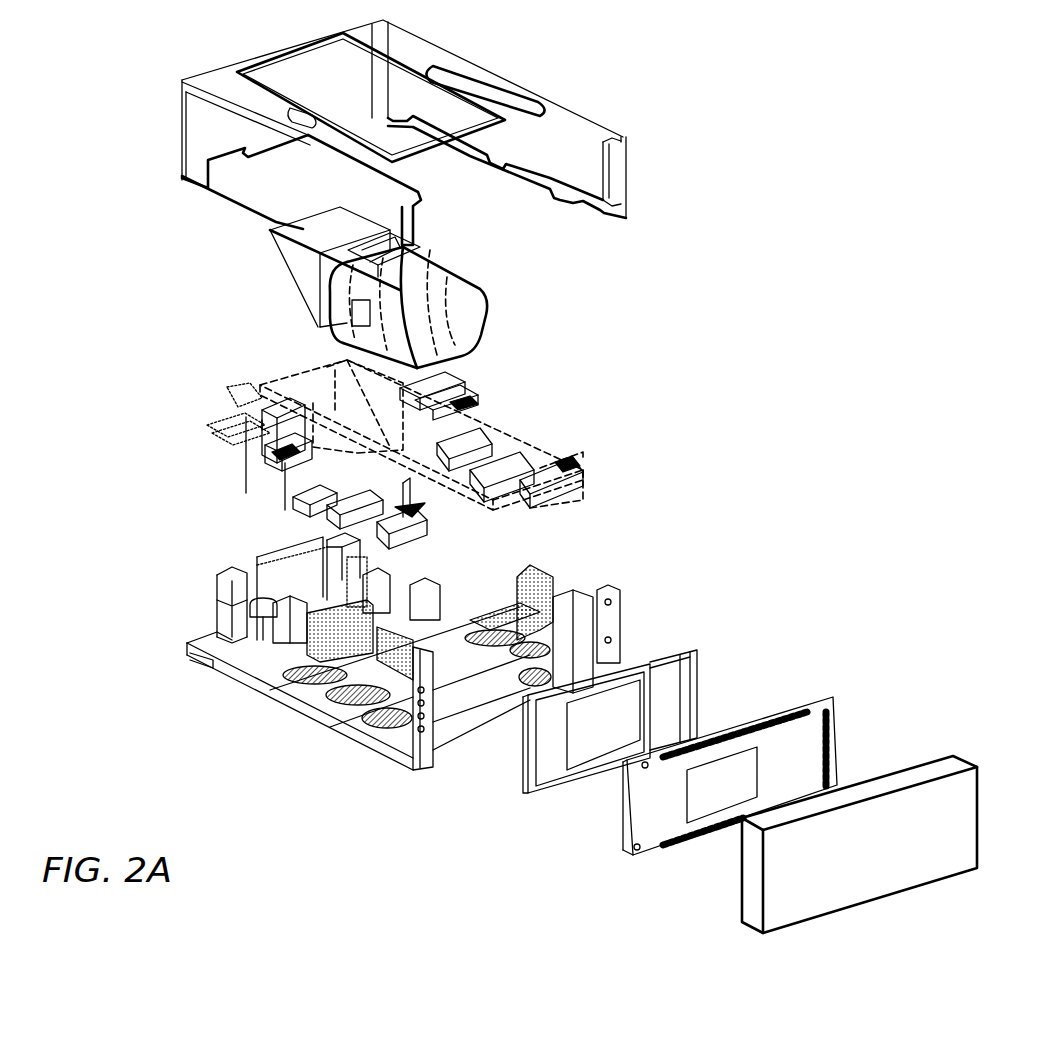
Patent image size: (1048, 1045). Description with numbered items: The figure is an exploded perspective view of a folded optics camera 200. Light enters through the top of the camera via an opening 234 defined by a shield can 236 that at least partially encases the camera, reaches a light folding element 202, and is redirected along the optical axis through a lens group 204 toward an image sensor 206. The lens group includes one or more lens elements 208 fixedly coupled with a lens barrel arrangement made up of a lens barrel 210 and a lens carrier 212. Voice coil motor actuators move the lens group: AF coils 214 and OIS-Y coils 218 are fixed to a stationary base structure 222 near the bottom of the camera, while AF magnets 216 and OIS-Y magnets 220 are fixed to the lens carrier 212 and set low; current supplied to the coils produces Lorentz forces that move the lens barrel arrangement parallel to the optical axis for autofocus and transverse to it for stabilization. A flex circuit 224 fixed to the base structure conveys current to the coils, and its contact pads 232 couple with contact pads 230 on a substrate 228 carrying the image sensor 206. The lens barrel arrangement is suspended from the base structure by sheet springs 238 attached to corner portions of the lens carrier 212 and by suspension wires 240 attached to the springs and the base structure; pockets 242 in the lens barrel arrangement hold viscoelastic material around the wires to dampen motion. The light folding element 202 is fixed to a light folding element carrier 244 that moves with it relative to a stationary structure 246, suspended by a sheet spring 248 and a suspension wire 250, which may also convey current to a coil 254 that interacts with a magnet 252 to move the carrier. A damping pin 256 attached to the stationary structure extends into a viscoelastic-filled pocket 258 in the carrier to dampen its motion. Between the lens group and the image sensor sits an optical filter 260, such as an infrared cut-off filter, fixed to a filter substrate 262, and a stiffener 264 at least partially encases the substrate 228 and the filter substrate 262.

The folded optics camera 200 is at (787, 353).
The light folding element 202 is at (316, 267).
The lens group 204 is at (435, 307).
The image sensor 206 is at (708, 820).
The lens element 208 is at (481, 302).
The lens barrel 210 is at (424, 255).
The lens carrier 212 is at (421, 460).
The AF coil 214 is at (390, 682).
The AF magnet 216 is at (401, 490).
The OIS-Y coil 218 is at (407, 657).
The OIS-Y magnet 220 is at (391, 491).
The base structure 222 is at (350, 658).
The flex circuit 224 is at (480, 678).
The substrate 228 is at (777, 756).
The contact pads 230 is at (702, 776).
The contact pads 232 is at (446, 720).
The opening 234 is at (402, 129).
The shield can 236 is at (507, 138).
The spring 238 is at (584, 453).
The suspension wire 240 is at (575, 494).
The pocket 242 is at (580, 482).
The light folding element carrier 244 is at (390, 395).
The stationary structure 246 is at (290, 588).
The sheet spring 248 is at (220, 422).
The suspension wire 250 is at (239, 463).
The magnet 252 is at (208, 605).
The coil 254 is at (277, 395).
The damping pin 256 is at (227, 389).
The pocket 258 is at (272, 406).
The optical filter 260 is at (583, 752).
The filter substrate 262 is at (691, 683).
The stiffener 264 is at (878, 825).